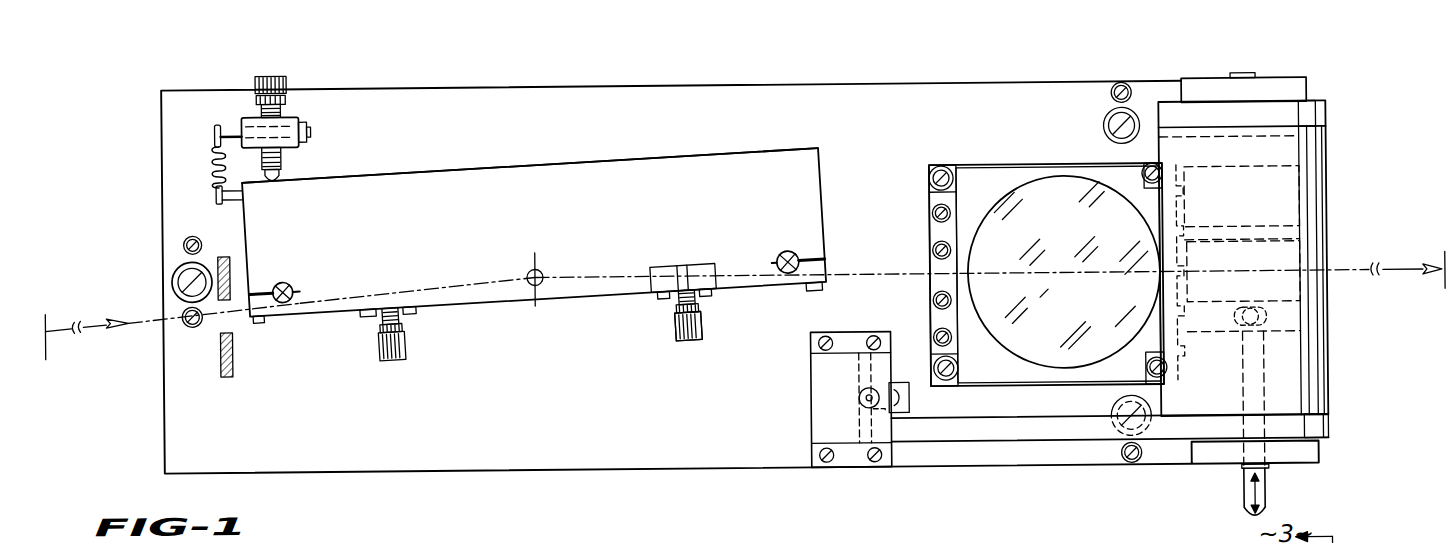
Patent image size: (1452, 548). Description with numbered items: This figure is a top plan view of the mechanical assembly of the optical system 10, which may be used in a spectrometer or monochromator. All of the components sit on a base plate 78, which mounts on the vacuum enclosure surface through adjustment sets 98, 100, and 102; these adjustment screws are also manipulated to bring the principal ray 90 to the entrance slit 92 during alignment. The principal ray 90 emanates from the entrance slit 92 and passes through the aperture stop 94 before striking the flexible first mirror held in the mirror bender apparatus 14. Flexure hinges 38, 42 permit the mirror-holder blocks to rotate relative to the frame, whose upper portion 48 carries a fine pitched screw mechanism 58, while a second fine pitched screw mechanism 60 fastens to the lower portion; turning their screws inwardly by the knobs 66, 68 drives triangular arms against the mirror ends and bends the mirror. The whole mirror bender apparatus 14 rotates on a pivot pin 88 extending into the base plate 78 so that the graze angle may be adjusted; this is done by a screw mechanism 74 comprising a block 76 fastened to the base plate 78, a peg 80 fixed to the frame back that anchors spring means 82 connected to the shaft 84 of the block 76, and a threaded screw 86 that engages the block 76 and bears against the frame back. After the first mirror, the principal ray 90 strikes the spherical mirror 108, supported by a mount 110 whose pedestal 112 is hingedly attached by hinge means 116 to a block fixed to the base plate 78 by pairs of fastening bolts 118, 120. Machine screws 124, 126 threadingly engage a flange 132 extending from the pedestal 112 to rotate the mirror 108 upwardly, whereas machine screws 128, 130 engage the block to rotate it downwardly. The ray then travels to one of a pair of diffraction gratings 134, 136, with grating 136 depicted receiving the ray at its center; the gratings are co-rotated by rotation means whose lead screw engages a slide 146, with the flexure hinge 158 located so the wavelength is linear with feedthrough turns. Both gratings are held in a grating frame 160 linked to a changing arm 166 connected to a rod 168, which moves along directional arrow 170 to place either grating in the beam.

The optical system 10 is at (745, 280).
The mirror bender apparatus 14 is at (481, 154).
The flexure hinge 38 is at (287, 278).
The flexure hinge 42 is at (796, 251).
The upper portion 48 is at (608, 159).
The fine pitched screw mechanism 58 is at (414, 348).
The fine pitched screw mechanism 60 is at (672, 338).
The knob 66 is at (381, 359).
The knob 68 is at (703, 331).
The screw mechanism 74 is at (321, 120).
The block 76 is at (243, 110).
The base plate 78 is at (556, 467).
The peg 80 is at (230, 198).
The spring means 82 is at (213, 160).
The shaft 84 is at (216, 128).
The threaded screw 86 is at (279, 72).
The pivot pin 88 is at (543, 267).
The principal ray 90 is at (466, 281).
The entrance slit 92 is at (46, 312).
The aperture stop 94 is at (232, 368).
The adjustment set 98 is at (165, 270).
The adjustment set 100 is at (1104, 108).
The adjustment set 102 is at (1112, 444).
The spherical mirror 108 is at (1057, 188).
The mount 110 is at (924, 234).
The pedestal 112 is at (988, 170).
The hinge means 116 is at (1182, 352).
The fastening bolts 118 is at (942, 168).
The fastening bolts 120 is at (944, 383).
The machine screw 124 is at (933, 209).
The machine screw 126 is at (951, 344).
The machine screw 128 is at (932, 254).
The machine screw 130 is at (933, 306).
The flange 132 is at (936, 286).
The diffraction grating 134 is at (1297, 201).
The diffraction grating 136 is at (1302, 297).
The slide 146 is at (1336, 433).
The flexure hinge 158 is at (1250, 81).
The grating frame 160 is at (1295, 148).
The changing arm 166 is at (1257, 334).
The rod 168 is at (1265, 512).
The directional arrow 170 is at (1242, 497).